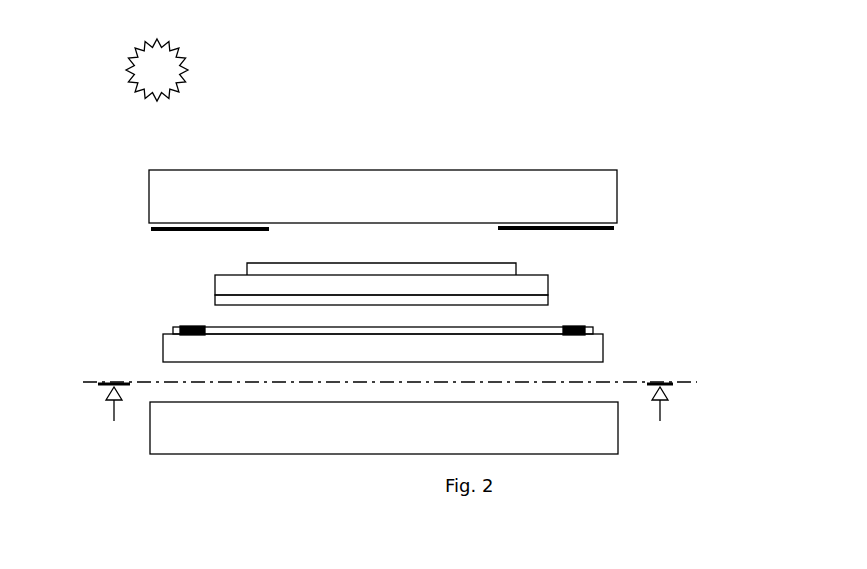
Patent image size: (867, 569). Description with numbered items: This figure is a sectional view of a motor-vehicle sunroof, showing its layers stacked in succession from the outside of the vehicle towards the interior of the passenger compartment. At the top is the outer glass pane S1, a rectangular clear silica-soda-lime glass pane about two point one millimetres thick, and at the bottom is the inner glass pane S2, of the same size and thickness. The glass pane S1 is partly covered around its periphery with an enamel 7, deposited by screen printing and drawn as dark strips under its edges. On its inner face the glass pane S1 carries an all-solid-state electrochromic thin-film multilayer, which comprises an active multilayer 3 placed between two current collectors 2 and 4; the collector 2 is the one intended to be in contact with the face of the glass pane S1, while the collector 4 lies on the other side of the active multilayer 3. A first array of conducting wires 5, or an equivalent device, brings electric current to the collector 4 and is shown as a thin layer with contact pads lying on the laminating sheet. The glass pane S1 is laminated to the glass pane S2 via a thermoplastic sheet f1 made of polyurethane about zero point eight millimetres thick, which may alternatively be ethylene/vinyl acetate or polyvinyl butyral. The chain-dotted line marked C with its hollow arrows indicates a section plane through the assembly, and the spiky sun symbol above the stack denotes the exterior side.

The glass pane S1 is at (133, 192).
The enamel 7 is at (176, 237).
The current collector 2 is at (531, 265).
The active multilayer 3 is at (563, 282).
The current collector 4 is at (563, 299).
The first array of conducting wires 5 is at (156, 331).
The thermoplastic sheet f1 is at (618, 349).
The section plane C is at (385, 423).
The glass pane S2 is at (633, 460).